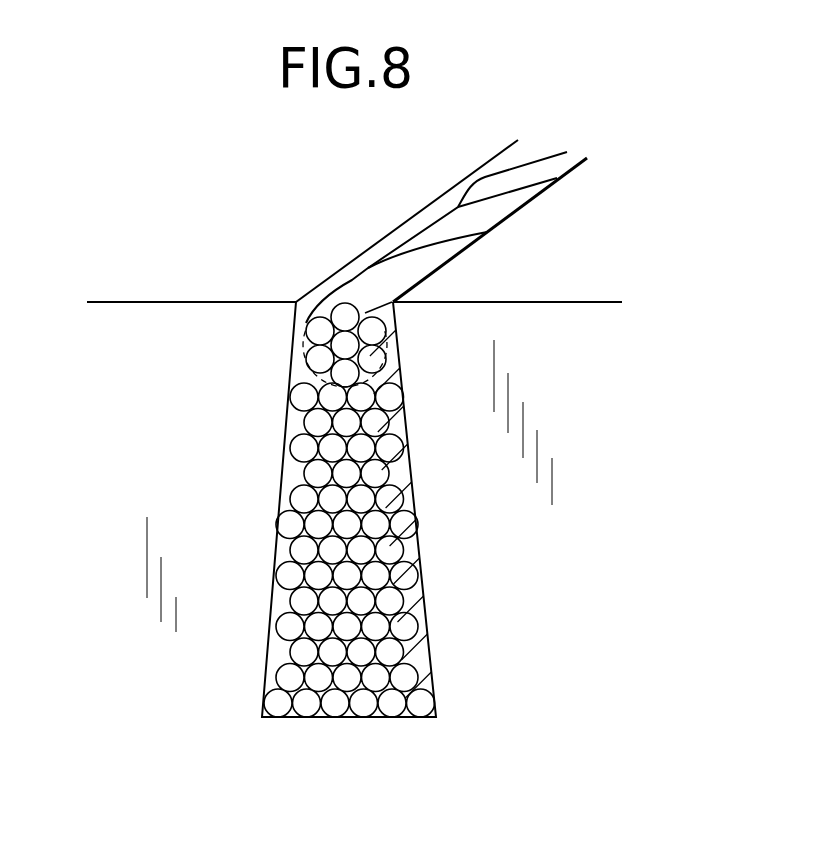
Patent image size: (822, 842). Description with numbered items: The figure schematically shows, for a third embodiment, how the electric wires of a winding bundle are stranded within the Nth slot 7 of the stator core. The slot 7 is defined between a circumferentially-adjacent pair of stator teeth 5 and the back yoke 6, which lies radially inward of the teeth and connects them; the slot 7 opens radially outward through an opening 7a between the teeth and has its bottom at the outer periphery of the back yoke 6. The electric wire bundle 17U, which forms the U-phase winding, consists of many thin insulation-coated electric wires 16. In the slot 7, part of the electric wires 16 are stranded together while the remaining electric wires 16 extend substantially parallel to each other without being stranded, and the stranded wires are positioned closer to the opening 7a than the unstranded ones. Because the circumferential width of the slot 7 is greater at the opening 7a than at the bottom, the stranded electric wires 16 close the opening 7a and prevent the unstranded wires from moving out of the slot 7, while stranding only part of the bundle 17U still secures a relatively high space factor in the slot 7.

The stator teeth 5 is at (225, 322).
The back yoke 6 is at (372, 745).
The slot 7 is at (290, 477).
The opening 7a is at (307, 312).
The electric wires 16 is at (390, 498).
The electric wire bundle 17U is at (420, 237).